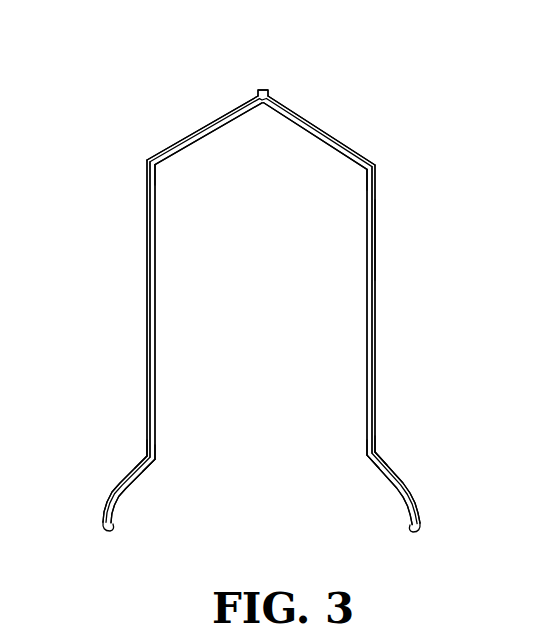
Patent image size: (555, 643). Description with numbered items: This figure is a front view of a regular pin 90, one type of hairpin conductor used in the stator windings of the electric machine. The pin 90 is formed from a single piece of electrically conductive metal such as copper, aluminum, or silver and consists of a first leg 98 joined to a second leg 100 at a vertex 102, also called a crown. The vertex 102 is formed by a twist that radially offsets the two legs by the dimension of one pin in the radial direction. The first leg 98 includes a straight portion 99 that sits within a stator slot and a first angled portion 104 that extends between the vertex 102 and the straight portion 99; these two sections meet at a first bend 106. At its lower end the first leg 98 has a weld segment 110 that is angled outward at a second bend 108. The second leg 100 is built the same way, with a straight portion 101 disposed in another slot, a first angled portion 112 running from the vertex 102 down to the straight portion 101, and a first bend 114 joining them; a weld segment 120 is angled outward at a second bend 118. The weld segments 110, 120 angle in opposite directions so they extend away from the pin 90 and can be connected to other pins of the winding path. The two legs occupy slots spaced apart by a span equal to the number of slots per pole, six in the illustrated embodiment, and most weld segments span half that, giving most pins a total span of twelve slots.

The regular pin 90 is at (166, 56).
The first leg 98 is at (392, 152).
The straight portion 99 is at (378, 240).
The second leg 100 is at (147, 305).
The straight portion 101 is at (156, 363).
The vertex 102 is at (262, 90).
The first angled portion 104 is at (320, 128).
The first bend 106 is at (365, 170).
The second bend 108 is at (372, 455).
The weld segment 110 is at (403, 484).
The first angled portion 112 is at (208, 125).
The first bend 114 is at (156, 168).
The second bend 118 is at (158, 462).
The weld segment 120 is at (124, 478).